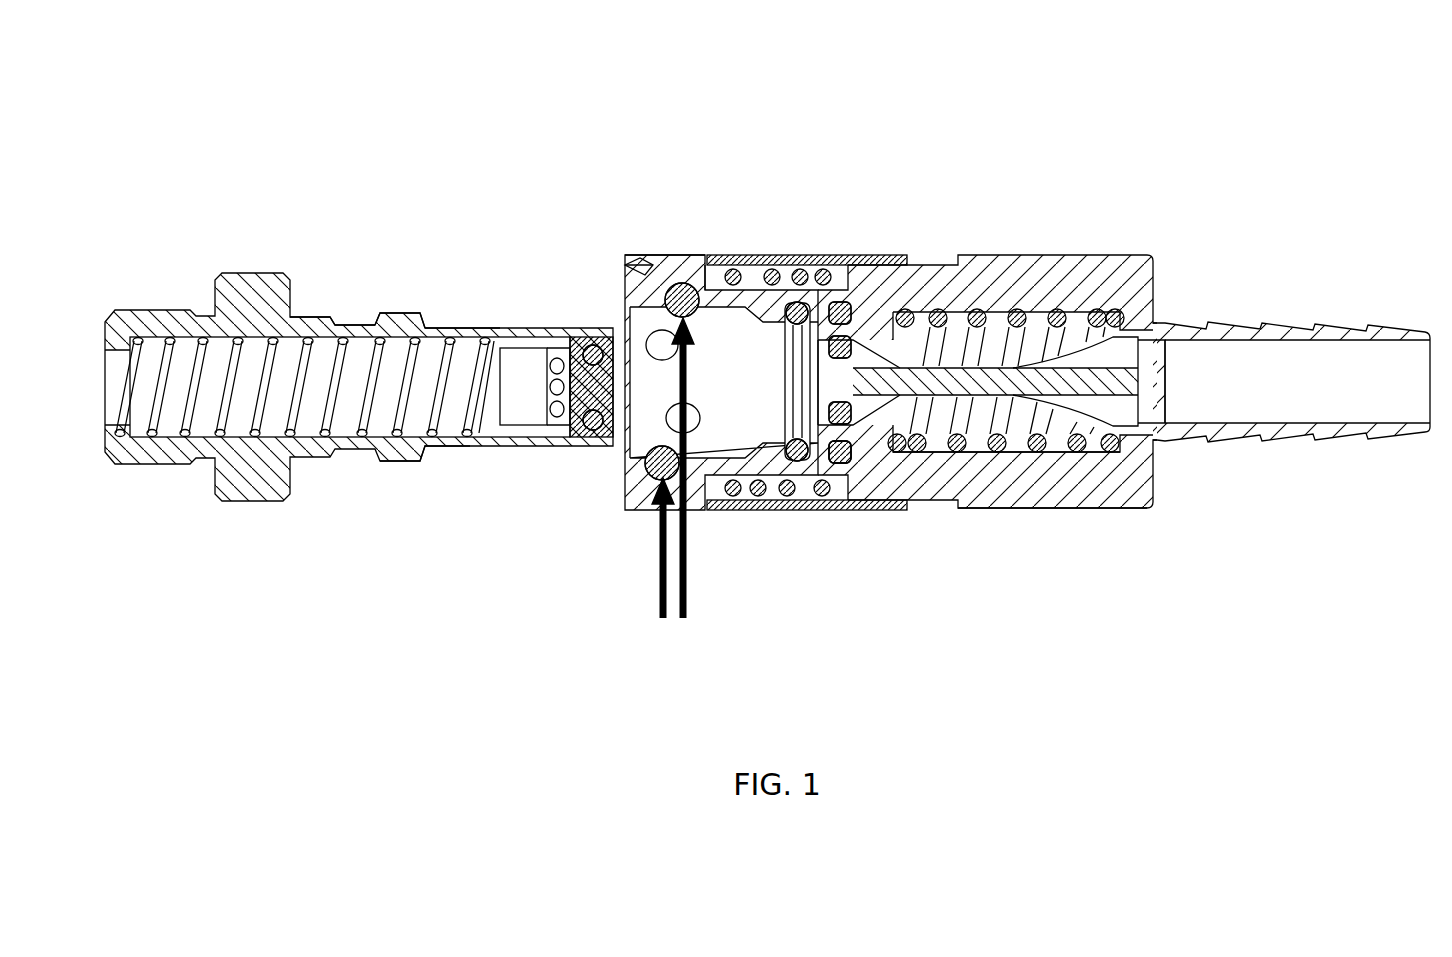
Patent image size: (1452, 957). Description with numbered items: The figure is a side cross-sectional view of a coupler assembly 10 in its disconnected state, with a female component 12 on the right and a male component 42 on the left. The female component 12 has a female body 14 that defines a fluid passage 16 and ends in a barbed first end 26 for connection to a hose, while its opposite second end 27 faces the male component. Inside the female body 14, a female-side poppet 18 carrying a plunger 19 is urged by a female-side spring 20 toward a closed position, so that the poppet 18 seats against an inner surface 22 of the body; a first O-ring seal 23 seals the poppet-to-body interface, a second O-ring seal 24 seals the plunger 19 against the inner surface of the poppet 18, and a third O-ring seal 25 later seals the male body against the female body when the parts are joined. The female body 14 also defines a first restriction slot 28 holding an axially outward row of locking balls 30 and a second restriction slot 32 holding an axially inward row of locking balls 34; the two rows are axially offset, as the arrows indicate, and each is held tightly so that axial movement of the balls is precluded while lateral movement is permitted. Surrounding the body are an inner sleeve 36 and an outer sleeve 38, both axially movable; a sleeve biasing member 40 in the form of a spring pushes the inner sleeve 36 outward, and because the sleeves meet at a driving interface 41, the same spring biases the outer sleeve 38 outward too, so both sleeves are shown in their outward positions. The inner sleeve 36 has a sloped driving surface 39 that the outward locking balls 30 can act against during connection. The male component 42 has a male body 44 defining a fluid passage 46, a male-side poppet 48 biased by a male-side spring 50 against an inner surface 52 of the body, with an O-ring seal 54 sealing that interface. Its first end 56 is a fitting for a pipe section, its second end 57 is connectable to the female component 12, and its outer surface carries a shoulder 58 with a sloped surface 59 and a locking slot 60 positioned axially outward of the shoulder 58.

The coupler assembly 10 is at (848, 128).
The female component 12 is at (978, 552).
The female body 14 is at (1118, 510).
The fluid passage 16 is at (994, 334).
The female-side poppet 18 is at (906, 266).
The plunger 19 is at (896, 420).
The female-side spring 20 is at (1033, 447).
The inner surface 22 is at (866, 300).
The first O-ring seal 23 is at (846, 302).
The second O-ring seal 24 is at (833, 470).
The third O-ring seal 25 is at (800, 300).
The first end 26 is at (1429, 366).
The second end 27 is at (624, 501).
The first restriction slot 28 is at (646, 509).
The locking balls 30 is at (694, 496).
The second restriction slot 32 is at (664, 284).
The locking balls 34 is at (693, 266).
The inner sleeve 36 is at (707, 258).
The outer sleeve 38 is at (766, 262).
The driving surface 39 is at (616, 268).
The sleeve biasing member 40 is at (771, 497).
The driving interface 41 is at (712, 508).
The male component 42 is at (337, 485).
The male body 44 is at (142, 310).
The fluid passage 46 is at (525, 378).
The male-side poppet 48 is at (584, 343).
The male-side spring 50 is at (421, 450).
The inner surface 52 is at (472, 350).
The O-ring seal 54 is at (560, 414).
The first end 56 is at (105, 440).
The second end 57 is at (596, 440).
The shoulder 58 is at (396, 313).
The sloped surface 59 is at (426, 328).
The locking slot 60 is at (348, 325).